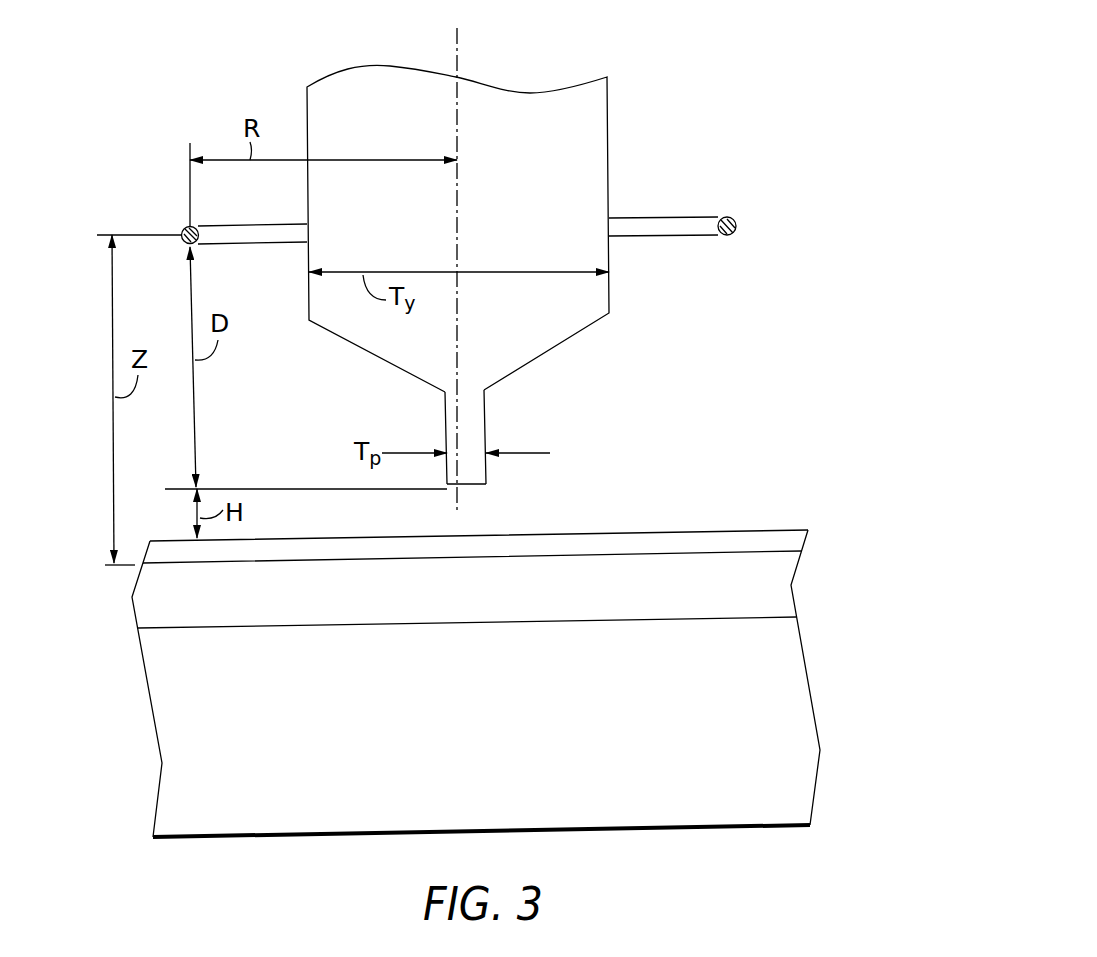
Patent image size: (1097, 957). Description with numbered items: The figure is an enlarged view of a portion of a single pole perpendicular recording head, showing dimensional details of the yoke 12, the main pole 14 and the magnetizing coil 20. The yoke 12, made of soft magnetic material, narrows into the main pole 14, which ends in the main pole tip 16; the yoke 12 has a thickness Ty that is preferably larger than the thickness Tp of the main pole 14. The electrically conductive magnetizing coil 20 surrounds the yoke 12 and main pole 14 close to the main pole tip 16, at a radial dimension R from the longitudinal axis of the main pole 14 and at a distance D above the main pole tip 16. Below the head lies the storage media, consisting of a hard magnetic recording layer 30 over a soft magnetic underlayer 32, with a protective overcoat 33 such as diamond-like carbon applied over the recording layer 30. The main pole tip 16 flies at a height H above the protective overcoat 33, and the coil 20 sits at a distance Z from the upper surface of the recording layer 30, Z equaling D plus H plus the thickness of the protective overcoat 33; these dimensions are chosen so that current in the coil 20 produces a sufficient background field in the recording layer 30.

The yoke 12 is at (596, 116).
The main pole 14 is at (478, 418).
The main pole tip 16 is at (478, 486).
The magnetizing coil 20 is at (737, 224).
The hard magnetic recording layer 30 is at (778, 587).
The soft magnetic underlayer 32 is at (797, 715).
The protective overcoat 33 is at (793, 542).